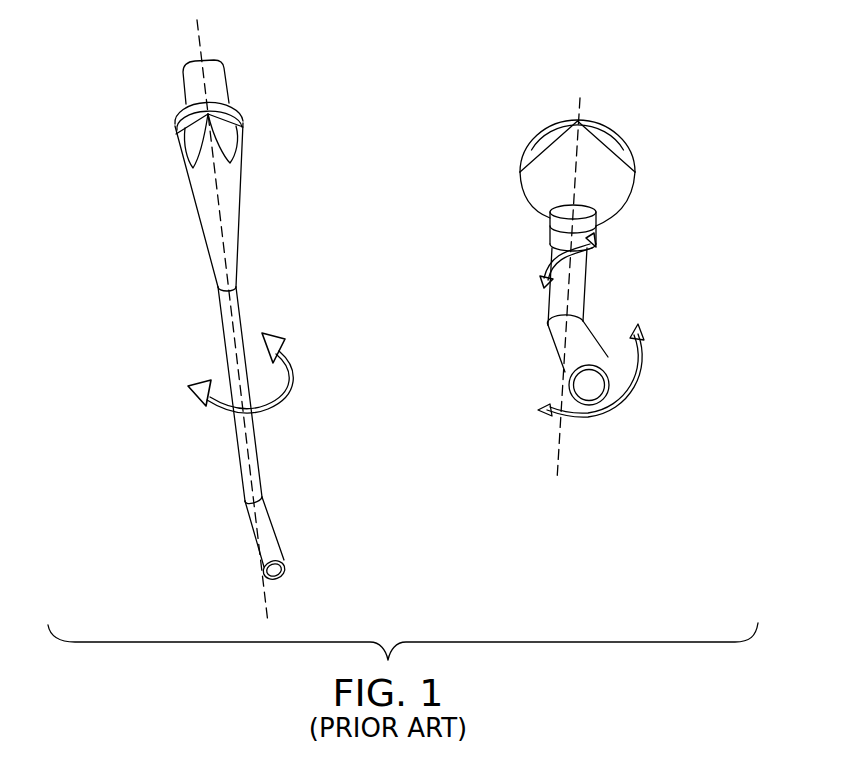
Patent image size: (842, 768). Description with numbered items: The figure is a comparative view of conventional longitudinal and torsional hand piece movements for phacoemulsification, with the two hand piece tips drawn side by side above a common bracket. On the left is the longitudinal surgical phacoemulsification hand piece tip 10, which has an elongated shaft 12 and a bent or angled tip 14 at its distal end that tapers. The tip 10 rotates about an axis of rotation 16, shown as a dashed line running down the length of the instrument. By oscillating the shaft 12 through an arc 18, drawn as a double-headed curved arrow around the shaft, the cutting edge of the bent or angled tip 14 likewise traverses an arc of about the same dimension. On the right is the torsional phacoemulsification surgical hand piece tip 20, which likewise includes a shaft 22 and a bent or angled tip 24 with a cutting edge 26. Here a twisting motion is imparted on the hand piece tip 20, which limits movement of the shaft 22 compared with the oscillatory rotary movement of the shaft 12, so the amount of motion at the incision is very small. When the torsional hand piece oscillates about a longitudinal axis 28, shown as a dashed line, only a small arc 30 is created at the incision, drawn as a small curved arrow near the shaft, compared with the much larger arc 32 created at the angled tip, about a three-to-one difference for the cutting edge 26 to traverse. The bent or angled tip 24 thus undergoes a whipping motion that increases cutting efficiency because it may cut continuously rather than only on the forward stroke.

The longitudinal surgical phacoemulsification hand piece tip 10 is at (126, 293).
The elongated shaft 12 is at (215, 287).
The bent or angled tip 14 is at (286, 566).
The axis of rotation 16 is at (197, 48).
The arc 18 is at (213, 418).
The torsional phacoemulsification surgical hand piece tip 20 is at (672, 240).
The shaft 22 is at (588, 290).
The bent or angled tip 24 is at (547, 337).
The cutting edge 26 is at (597, 426).
The longitudinal axis 28 is at (556, 460).
The small arc 30 is at (534, 262).
The arc 32 is at (651, 378).